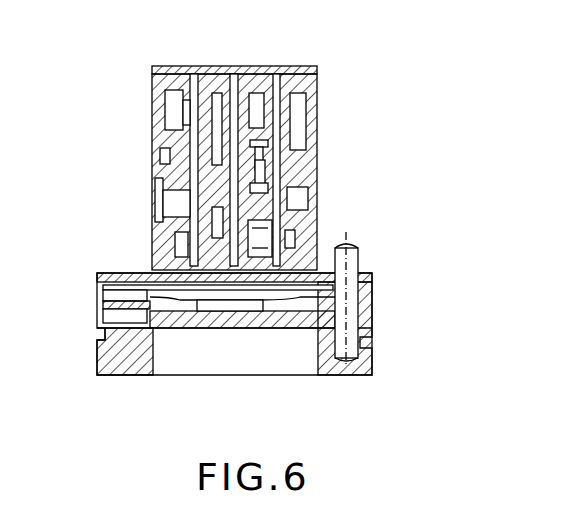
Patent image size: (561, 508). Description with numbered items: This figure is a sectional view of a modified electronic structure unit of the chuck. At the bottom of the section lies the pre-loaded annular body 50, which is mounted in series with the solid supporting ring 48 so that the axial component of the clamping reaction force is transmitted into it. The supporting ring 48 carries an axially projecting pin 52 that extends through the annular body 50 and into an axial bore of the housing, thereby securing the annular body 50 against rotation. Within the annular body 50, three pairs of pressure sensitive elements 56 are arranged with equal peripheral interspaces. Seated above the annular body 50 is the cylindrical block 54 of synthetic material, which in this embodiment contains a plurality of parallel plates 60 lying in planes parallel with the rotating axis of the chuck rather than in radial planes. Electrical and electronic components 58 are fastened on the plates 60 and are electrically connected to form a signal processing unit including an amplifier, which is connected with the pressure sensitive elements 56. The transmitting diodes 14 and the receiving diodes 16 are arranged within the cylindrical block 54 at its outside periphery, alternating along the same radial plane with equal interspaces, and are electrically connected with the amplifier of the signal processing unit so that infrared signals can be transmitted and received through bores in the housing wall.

The transmitting diodes 14 is at (306, 196).
The receiving diodes 16 is at (160, 197).
The supporting ring 48 is at (124, 352).
The annular body 50 is at (374, 314).
The pin 52 is at (352, 260).
The cylindrical block 54 is at (320, 170).
The pressure sensitive elements 56 is at (103, 313).
The electrical and electronic components 58 is at (163, 162).
The parallel plates 60 is at (195, 73).